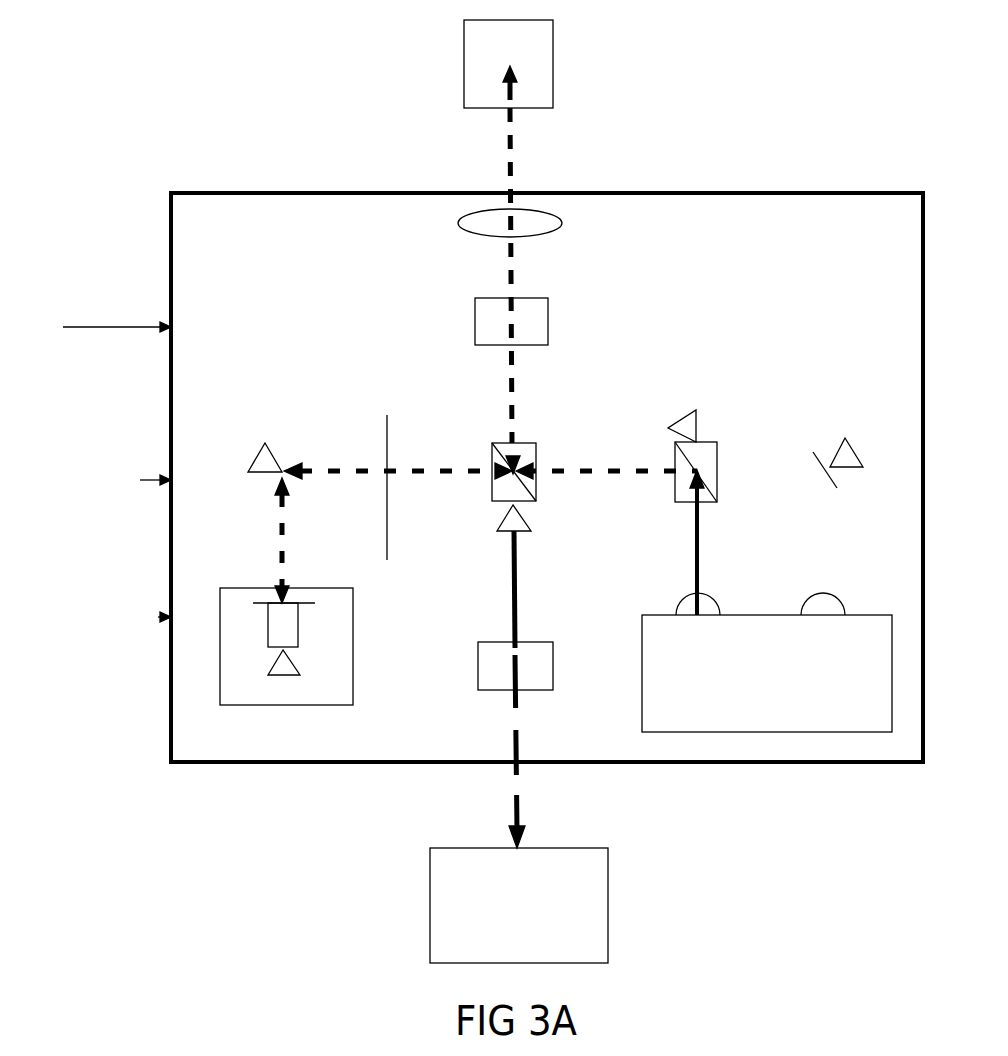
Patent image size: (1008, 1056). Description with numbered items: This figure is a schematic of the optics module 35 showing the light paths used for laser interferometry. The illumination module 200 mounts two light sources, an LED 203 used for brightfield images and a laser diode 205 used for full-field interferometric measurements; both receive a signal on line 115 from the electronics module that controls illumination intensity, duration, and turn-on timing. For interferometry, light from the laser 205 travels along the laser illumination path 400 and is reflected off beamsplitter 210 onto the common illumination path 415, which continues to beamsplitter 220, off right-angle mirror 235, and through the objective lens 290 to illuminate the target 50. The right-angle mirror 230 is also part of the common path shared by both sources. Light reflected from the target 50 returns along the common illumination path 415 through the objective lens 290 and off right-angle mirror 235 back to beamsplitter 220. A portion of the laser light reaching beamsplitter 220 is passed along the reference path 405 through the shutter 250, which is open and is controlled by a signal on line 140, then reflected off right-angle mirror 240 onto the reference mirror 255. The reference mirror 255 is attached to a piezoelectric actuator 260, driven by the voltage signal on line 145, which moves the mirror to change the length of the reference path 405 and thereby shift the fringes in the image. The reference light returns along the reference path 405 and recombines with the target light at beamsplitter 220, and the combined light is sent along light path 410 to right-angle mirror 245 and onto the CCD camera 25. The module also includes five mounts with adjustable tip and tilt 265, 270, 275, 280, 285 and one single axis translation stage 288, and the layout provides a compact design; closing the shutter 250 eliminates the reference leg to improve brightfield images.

The CCD camera 25 is at (437, 872).
The optics module 35 is at (296, 193).
The target 50 is at (462, 48).
The signal line 115 is at (74, 587).
The shutter control signal line 140 is at (85, 330).
The reference mirror actuator signal line 145 is at (73, 447).
The illumination module 200 is at (747, 695).
The LED 203 is at (801, 612).
The laser diode 205 is at (676, 612).
The beamsplitter 210 is at (675, 490).
The beamsplitter 220 is at (492, 478).
The right-angle mirror 230 is at (813, 466).
The right-angle mirror 235 is at (475, 322).
The right-angle mirror 240 is at (285, 490).
The right-angle mirror 245 is at (478, 665).
The shutter 250 is at (387, 418).
The reference mirror 255 is at (258, 600).
The piezoelectric actuator 260 is at (298, 623).
The adjustable tip and tilt mount 265 is at (845, 438).
The adjustable tip and tilt mount 270 is at (668, 428).
The adjustable tip and tilt mount 275 is at (497, 525).
The adjustable tip and tilt mount 280 is at (260, 450).
The adjustable tip and tilt mount 285 is at (272, 667).
The single axis translation stage 288 is at (267, 705).
The objective lens 290 is at (458, 223).
The laser illumination path 400 is at (700, 515).
The reference path 405 is at (357, 472).
The light path 410 is at (520, 703).
The common illumination path 415 is at (550, 473).